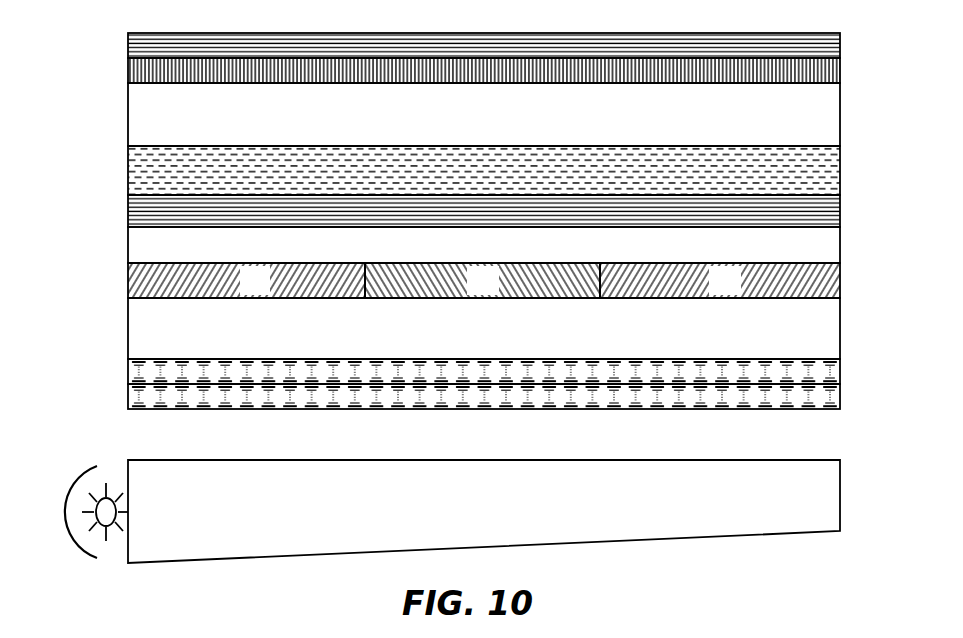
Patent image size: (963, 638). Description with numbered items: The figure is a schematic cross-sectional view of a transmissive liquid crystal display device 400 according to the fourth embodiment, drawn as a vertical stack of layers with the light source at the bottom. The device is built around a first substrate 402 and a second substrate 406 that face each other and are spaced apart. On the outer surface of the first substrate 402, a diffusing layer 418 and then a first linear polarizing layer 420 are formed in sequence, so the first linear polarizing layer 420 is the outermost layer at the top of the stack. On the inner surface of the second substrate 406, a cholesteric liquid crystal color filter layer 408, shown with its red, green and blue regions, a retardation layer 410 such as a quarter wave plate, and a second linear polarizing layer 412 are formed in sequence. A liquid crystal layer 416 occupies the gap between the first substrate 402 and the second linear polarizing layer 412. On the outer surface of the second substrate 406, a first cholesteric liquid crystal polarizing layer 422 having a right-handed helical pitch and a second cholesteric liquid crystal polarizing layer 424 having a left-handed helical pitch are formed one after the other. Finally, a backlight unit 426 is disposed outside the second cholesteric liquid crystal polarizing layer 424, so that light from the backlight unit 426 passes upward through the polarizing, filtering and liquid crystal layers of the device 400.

The transmissive liquid crystal display device 400 is at (128, 564).
The first linear polarizing layer 420 is at (842, 38).
The diffusing layer 418 is at (842, 70).
The first substrate 402 is at (842, 114).
The liquid crystal layer 416 is at (842, 174).
The second linear polarizing layer 412 is at (842, 206).
The retardation layer 410 is at (842, 247).
The cholesteric liquid crystal color filter layer 408 is at (842, 279).
The second substrate 406 is at (842, 330).
The first cholesteric liquid crystal polarizing layer 422 is at (842, 368).
The second cholesteric liquid crystal polarizing layer 424 is at (842, 396).
The backlight unit 426 is at (842, 502).